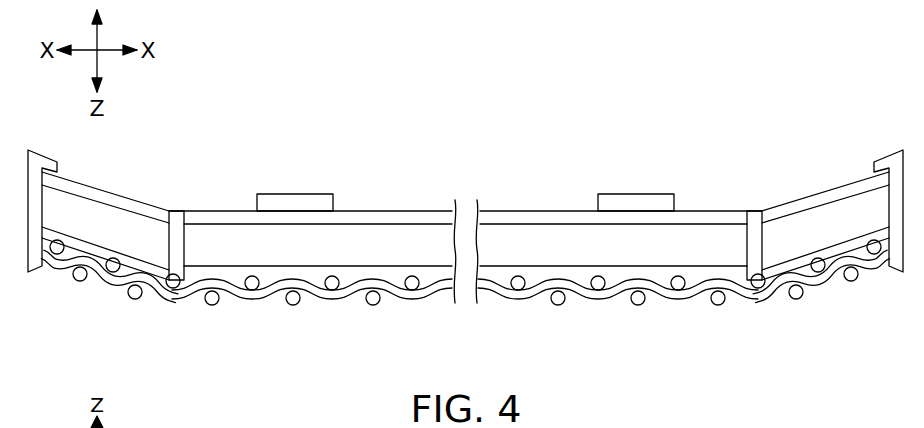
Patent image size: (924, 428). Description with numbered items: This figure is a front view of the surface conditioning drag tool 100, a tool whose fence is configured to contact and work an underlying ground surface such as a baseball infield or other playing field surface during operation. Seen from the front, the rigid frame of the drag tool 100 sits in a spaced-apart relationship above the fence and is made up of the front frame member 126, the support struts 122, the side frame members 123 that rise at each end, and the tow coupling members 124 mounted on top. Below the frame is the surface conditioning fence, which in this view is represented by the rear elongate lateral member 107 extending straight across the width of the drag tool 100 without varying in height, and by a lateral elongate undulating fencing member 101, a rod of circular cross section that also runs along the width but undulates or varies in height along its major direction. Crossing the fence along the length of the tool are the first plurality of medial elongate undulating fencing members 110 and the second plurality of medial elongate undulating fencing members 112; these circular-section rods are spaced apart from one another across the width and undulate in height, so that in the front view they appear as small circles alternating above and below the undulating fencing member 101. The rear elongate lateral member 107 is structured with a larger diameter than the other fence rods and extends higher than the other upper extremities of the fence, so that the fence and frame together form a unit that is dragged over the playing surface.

The surface conditioning drag tool 100 is at (755, 92).
The lateral elongate undulating fencing member 101 is at (637, 283).
The rear elongate lateral member 107 is at (533, 266).
The first plurality of medial elongate undulating fencing members 110 is at (469, 317).
The second plurality of medial elongate undulating fencing members 112 is at (465, 289).
The support struts 122 is at (175, 228).
The side frame members 123 is at (43, 150).
The tow coupling members 124 is at (292, 194).
The front frame member 126 is at (117, 195).